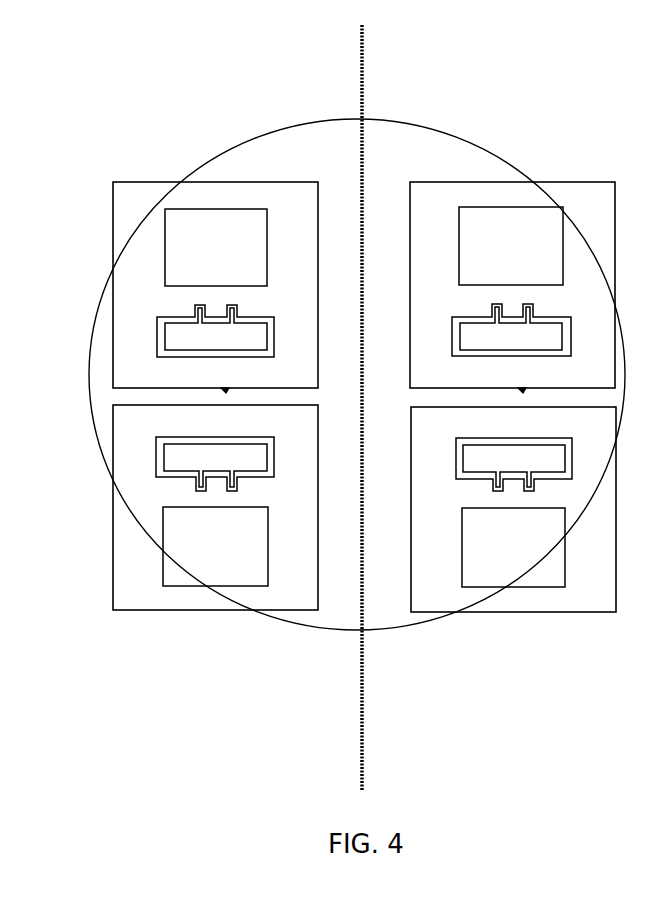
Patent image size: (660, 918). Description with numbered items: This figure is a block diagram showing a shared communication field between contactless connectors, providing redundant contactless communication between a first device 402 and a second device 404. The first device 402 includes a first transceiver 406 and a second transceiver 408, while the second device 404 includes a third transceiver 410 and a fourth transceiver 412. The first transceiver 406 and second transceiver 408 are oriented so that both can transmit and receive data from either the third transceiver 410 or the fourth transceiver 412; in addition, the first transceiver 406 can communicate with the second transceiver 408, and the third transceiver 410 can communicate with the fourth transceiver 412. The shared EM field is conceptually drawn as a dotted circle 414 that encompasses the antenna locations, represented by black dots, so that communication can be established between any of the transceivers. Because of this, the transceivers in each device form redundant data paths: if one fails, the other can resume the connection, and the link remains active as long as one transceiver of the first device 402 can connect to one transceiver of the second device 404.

The first device 402 is at (185, 337).
The second device 404 is at (534, 336).
The first transceiver 406 is at (187, 507).
The second transceiver 408 is at (185, 287).
The third transceiver 410 is at (533, 509).
The fourth transceiver 412 is at (534, 287).
The dotted circle 414 is at (357, 371).